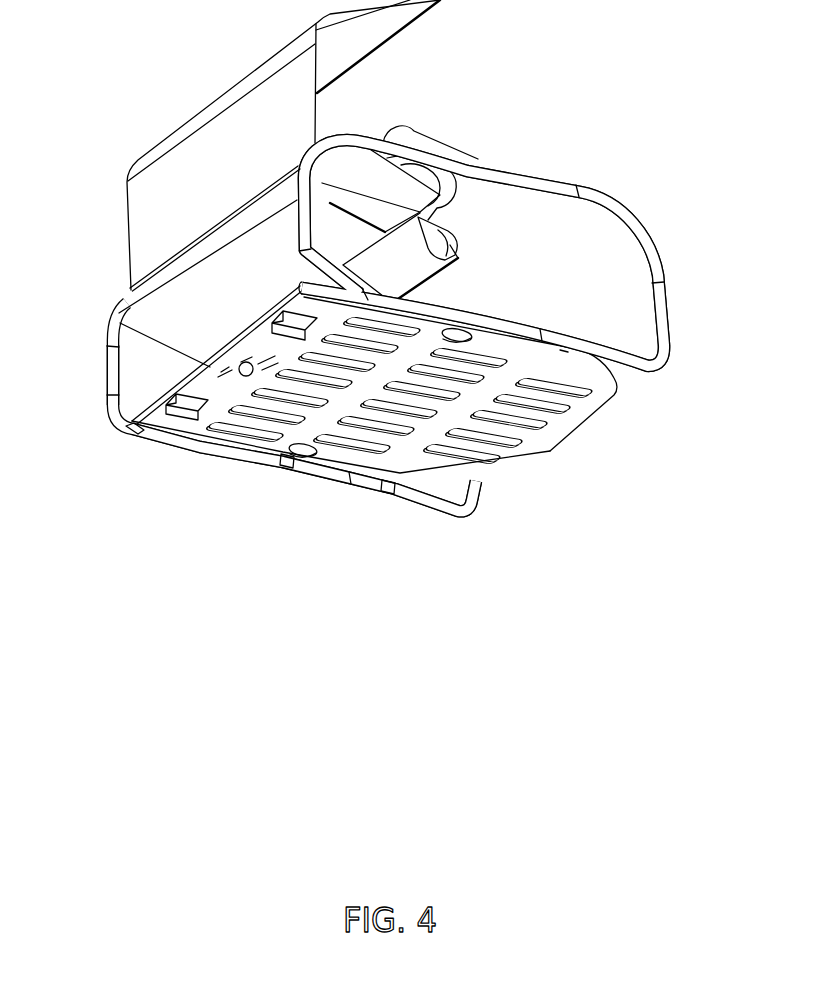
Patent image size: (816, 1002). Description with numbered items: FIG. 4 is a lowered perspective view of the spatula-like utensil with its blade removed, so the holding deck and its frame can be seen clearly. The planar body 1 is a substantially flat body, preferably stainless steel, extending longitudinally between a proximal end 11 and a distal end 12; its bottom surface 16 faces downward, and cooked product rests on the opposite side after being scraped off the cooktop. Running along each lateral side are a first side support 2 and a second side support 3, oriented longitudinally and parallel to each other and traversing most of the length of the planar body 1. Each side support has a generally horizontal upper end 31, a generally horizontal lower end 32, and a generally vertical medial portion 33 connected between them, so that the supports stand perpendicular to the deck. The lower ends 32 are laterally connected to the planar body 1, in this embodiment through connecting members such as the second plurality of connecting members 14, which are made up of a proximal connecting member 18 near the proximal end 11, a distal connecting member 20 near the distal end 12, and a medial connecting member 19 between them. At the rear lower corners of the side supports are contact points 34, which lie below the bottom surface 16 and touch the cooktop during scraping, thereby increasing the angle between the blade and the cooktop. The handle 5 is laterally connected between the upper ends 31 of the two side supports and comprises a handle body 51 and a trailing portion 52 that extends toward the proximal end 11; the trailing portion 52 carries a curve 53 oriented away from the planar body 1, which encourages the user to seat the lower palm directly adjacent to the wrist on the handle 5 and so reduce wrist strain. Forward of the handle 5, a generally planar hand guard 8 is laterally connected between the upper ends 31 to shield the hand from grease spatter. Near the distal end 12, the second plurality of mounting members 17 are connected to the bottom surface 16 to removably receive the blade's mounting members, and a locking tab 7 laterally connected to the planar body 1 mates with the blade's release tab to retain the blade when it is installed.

The planar body 1 is at (266, 398).
The first side support 2 is at (666, 213).
The second side support 3 is at (98, 306).
The handle 5 is at (412, 186).
The locking tab 7 is at (128, 431).
The hand guard 8 is at (258, 93).
The proximal end 11 is at (613, 422).
The distal end 12 is at (203, 343).
The second plurality of connecting members 14 is at (289, 468).
The bottom surface 16 is at (520, 372).
The second plurality of mounting members 17 is at (290, 322).
The proximal connecting member 18 is at (564, 348).
The medial connecting member 19 is at (470, 328).
The distal connecting member 20 is at (303, 280).
The upper end 31 is at (522, 150).
The lower end 32 is at (507, 304).
The medial portion 33 is at (666, 284).
The contact point 34 is at (670, 371).
The handle body 51 is at (354, 195).
The trailing portion 52 is at (379, 283).
The curve 53 is at (448, 228).